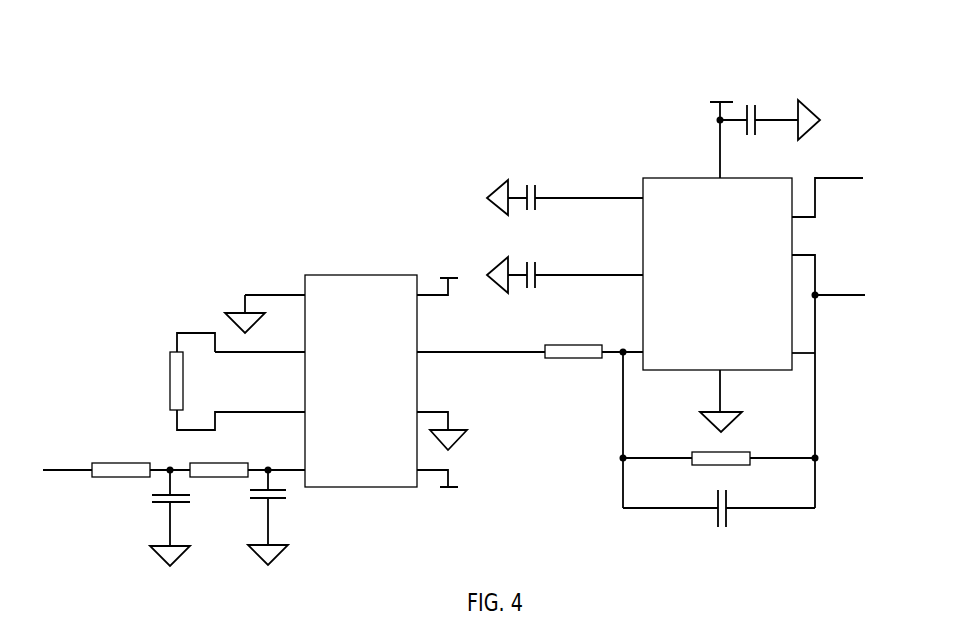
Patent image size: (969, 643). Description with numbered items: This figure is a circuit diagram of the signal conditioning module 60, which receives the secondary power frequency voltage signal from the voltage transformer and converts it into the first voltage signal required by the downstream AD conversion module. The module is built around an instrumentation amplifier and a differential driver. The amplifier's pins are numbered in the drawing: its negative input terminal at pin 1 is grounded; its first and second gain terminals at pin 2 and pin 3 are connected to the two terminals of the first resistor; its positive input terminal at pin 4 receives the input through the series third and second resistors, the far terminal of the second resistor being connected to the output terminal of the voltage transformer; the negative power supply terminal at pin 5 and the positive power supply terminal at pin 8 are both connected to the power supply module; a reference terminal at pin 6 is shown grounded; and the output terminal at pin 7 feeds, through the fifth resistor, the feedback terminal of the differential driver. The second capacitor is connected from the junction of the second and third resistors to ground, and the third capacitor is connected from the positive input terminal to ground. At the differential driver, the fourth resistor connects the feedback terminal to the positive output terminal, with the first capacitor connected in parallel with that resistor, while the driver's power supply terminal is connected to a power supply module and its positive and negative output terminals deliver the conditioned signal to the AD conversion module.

The signal conditioning module 60 is at (452, 80).
The pin 1 (IN-) of instrumentation amplifier A1 1 is at (265, 307).
The pin 2 (RG) of amplifier A1 2 is at (241, 342).
The pin 3 (RG) of amplifier A1 3 is at (241, 414).
The pin 4 (IN+) of amplifier A1 4 is at (276, 463).
The pin 5 (-VS) of amplifier A1 5 is at (437, 472).
The pin 6 (REF) of amplifier A1 6 is at (442, 424).
The pin 7 (VOUT) of amplifier A1 7 is at (481, 345).
The pin 8 (+VS) of amplifier A1 8 is at (437, 286).